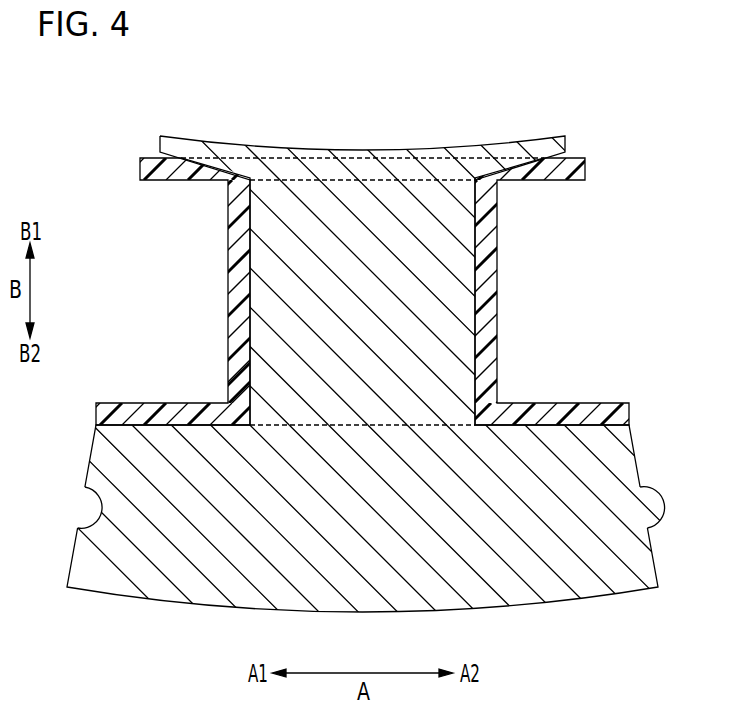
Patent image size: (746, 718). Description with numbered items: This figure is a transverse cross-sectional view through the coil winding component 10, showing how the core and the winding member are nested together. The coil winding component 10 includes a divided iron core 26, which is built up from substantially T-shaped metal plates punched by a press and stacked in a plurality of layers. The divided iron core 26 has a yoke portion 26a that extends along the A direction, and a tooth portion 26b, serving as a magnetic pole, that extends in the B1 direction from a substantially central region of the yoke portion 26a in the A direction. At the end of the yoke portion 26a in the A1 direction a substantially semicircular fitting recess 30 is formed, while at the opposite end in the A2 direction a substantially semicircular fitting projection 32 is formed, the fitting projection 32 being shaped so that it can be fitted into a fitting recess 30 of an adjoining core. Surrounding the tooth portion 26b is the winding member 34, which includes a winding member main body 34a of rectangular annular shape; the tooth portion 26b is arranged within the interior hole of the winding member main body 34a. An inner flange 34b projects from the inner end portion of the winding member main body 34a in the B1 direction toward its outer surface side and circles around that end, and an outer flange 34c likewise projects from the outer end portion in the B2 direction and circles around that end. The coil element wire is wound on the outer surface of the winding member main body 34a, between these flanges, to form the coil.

The coil winding component 10 is at (134, 104).
The divided iron core 26 is at (570, 265).
The yoke portion 26a is at (535, 452).
The tooth portion 26b is at (415, 293).
The fitting recess 30 is at (92, 512).
The fitting projection 32 is at (651, 497).
The winding member 34 is at (126, 230).
The winding member main body 34a is at (237, 264).
The inner flange 34b is at (162, 172).
The outer flange 34c is at (158, 410).